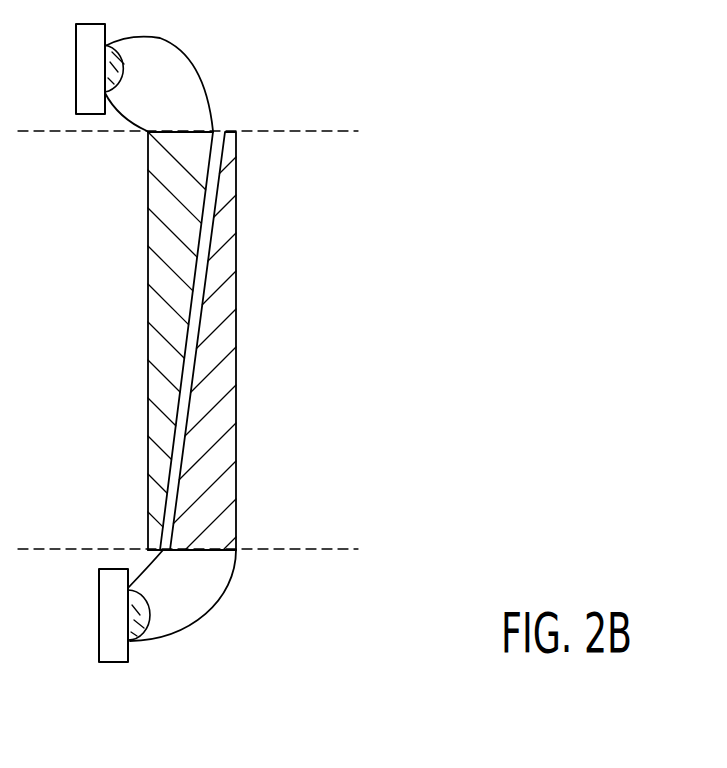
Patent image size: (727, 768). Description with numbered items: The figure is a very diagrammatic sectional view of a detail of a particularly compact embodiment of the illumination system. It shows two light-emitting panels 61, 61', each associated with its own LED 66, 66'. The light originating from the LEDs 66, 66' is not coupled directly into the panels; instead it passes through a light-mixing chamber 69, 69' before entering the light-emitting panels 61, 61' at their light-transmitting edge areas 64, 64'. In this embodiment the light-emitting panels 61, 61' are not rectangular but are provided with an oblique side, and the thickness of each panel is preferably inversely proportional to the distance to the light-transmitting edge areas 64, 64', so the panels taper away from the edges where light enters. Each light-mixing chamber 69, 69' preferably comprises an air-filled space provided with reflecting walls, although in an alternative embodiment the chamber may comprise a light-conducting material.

The light-emitting panel 61 is at (157, 341).
The light-emitting panel 61' is at (233, 341).
The light-transmitting edge area 64 is at (158, 153).
The light-transmitting edge area 64' is at (222, 532).
The LED 66 is at (160, 60).
The LED 66' is at (194, 622).
The light-mixing chamber 69 is at (185, 84).
The light-mixing chamber 69' is at (220, 595).